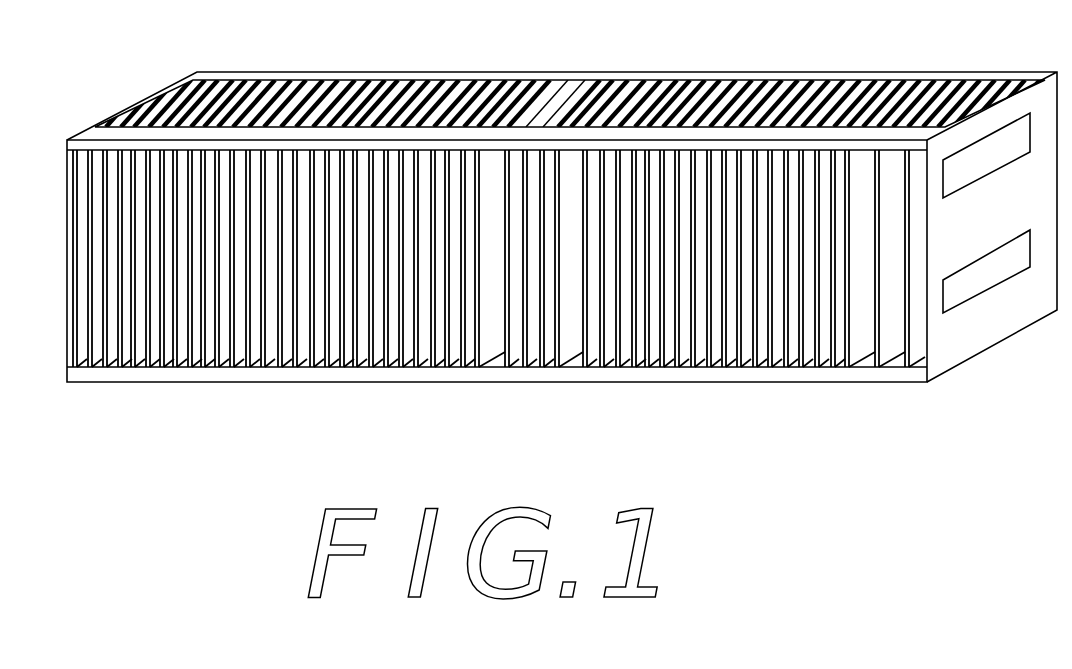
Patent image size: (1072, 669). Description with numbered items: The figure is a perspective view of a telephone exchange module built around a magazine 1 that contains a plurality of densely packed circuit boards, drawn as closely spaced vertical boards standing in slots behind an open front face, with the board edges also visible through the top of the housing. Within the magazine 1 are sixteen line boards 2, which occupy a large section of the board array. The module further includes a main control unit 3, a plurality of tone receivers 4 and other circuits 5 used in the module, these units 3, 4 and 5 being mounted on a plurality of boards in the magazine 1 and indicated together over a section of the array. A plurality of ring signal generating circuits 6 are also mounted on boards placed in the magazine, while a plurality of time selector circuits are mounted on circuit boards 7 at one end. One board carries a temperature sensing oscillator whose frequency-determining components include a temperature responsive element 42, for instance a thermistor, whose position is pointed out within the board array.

The magazine 1 is at (632, 77).
The line boards 2 is at (563, 408).
The main control unit 3 is at (702, 305).
The tone receivers 4 is at (702, 305).
The other circuits 5 is at (822, 408).
The ring signal generating circuits 6 is at (907, 408).
The circuit boards 7 is at (142, 408).
The temperature responsive element 42 is at (376, 342).